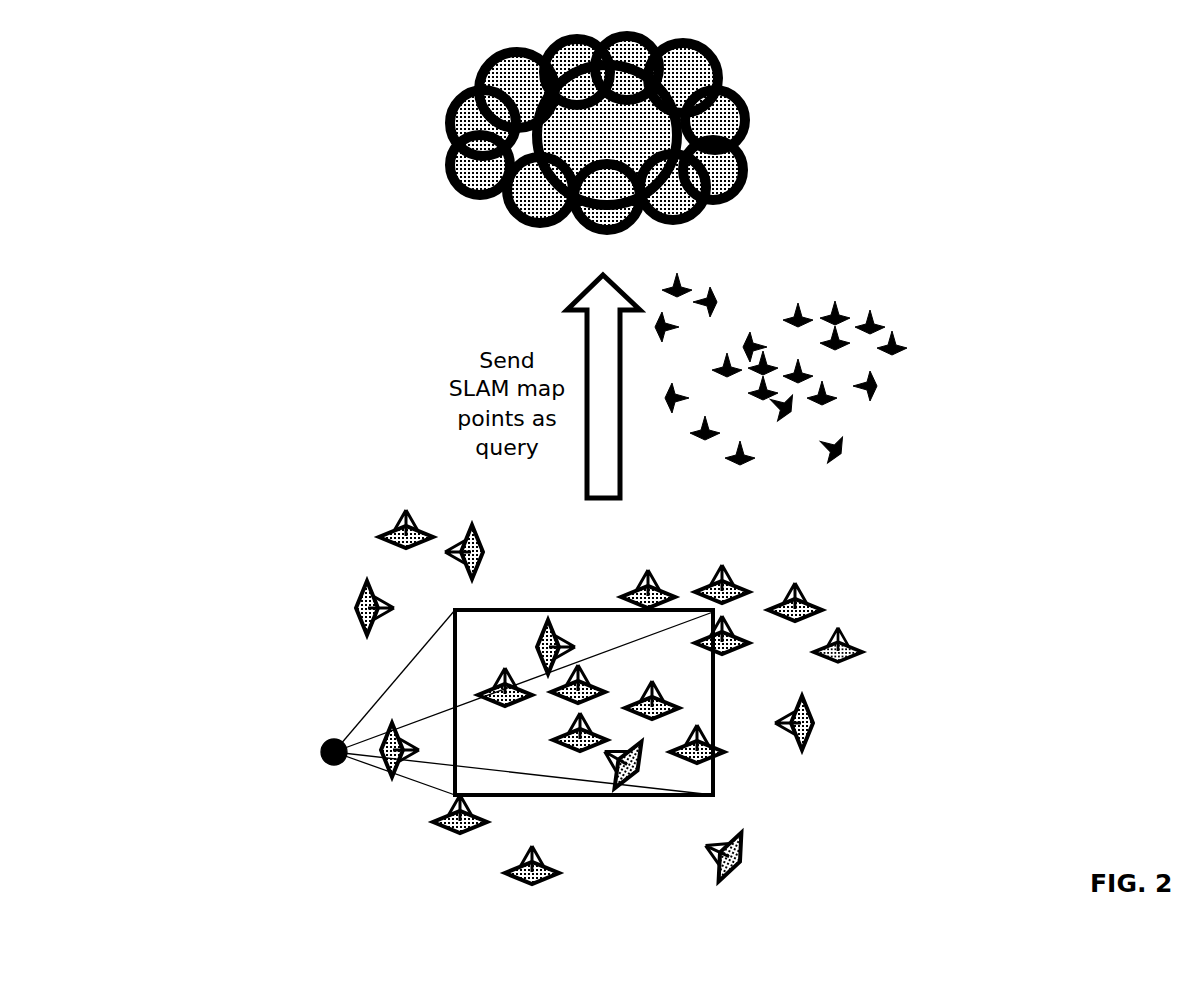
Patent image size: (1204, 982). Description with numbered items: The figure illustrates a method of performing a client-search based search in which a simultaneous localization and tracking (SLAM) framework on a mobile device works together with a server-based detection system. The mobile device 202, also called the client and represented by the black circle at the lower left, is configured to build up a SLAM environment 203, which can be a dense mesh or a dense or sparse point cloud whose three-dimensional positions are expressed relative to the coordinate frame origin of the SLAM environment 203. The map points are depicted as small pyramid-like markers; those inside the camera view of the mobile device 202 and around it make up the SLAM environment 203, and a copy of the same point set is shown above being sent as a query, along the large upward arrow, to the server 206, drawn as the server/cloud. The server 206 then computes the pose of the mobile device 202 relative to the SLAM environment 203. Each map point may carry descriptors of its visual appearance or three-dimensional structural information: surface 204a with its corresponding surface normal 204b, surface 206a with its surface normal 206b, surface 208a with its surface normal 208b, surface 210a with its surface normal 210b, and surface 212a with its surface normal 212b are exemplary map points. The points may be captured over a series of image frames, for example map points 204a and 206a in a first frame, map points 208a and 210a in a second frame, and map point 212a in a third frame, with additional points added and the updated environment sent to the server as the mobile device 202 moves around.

The mobile device 202 is at (323, 742).
The SLAM environment 203 is at (853, 280).
The surface 204a is at (864, 652).
The surface normal 204b is at (842, 627).
The server 206 is at (737, 85).
The surface 206a is at (810, 733).
The surface normal 206b is at (775, 724).
The surface 208a is at (642, 768).
The surface normal 208b is at (600, 762).
The surface 210a is at (549, 620).
The surface normal 210b is at (565, 642).
The surface 212a is at (382, 538).
The surface normal 212b is at (403, 510).